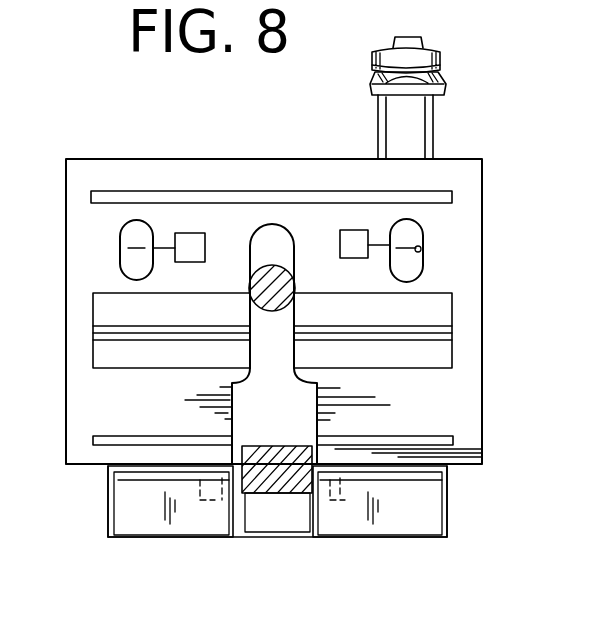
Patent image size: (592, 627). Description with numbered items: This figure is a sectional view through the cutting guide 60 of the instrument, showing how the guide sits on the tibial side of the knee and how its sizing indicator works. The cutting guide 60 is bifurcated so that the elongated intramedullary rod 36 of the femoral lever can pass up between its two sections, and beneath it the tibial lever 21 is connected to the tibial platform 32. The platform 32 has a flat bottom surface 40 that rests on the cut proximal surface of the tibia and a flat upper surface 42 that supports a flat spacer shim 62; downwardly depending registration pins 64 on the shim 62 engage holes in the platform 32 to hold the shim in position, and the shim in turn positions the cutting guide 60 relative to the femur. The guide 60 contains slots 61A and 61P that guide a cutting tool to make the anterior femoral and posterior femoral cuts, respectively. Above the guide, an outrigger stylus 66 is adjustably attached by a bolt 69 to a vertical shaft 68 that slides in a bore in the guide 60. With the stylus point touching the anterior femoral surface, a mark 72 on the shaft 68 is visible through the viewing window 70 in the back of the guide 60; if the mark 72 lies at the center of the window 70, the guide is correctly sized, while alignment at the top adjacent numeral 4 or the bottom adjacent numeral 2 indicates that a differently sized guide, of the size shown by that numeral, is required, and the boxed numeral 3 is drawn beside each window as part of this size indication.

The cutting guide 60 is at (483, 294).
The anterior femoral cut slot 61A is at (420, 191).
The posterior femoral cut slot 61P is at (433, 441).
The mark 72 is at (403, 246).
The viewing window 70 is at (422, 249).
The bolt 69 is at (388, 63).
The outrigger stylus 66 is at (446, 83).
The vertical shaft 68 is at (420, 124).
The intramedullary rod 36 is at (274, 292).
The tibial lever 21 is at (272, 503).
The flat bottom surface 40 is at (330, 538).
The tibial platform 32 is at (104, 513).
The registration pins 64 is at (345, 495).
The spacer shim 62 is at (107, 470).
The flat upper surface 42 is at (450, 465).
The size numeral 2 is at (440, 272).
The indicator box 3 is at (271, 246).
The size numeral 4 is at (440, 231).